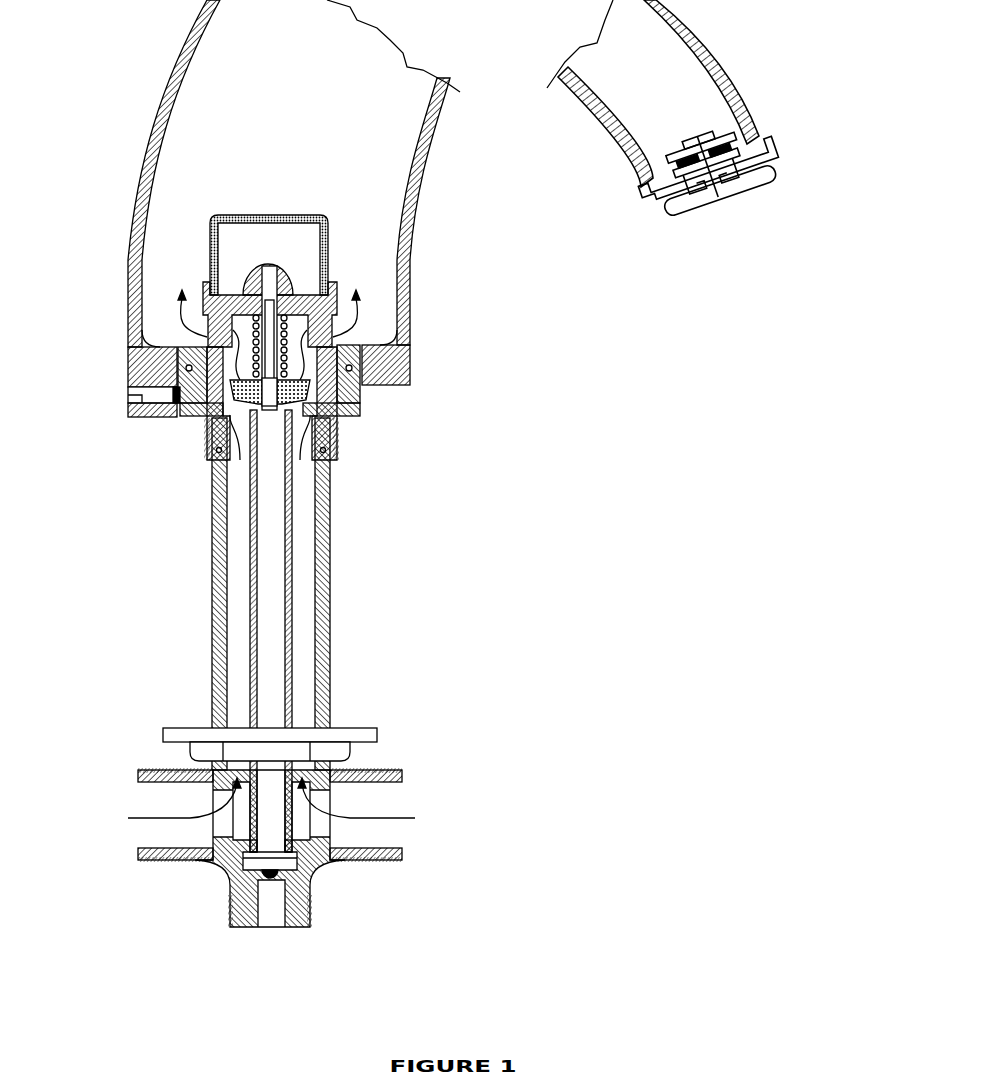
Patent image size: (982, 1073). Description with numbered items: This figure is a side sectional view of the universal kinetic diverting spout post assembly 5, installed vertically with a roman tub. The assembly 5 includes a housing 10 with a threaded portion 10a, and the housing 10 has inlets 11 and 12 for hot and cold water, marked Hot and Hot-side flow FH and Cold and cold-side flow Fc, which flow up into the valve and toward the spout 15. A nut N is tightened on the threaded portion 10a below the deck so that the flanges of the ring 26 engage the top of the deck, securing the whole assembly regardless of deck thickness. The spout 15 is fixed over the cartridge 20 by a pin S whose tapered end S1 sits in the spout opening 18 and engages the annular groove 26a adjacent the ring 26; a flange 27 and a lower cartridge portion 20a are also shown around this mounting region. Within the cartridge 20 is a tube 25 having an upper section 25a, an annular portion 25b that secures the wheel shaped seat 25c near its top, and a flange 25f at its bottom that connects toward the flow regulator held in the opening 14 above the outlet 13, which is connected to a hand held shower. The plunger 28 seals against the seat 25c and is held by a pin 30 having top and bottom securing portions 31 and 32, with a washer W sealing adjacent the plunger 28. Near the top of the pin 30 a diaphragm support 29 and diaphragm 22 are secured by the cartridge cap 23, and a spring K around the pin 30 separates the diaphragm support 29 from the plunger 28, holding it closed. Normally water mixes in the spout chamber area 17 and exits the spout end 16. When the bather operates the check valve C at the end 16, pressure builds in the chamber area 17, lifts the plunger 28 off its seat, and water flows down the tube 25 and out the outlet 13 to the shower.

The assembly 5 is at (442, 655).
The housing 10 is at (348, 627).
The threaded portion 10a is at (332, 590).
The hot water inlet 11 is at (400, 770).
The cold water inlet 12 is at (160, 770).
The outlet 13 is at (290, 928).
The opening 14 is at (232, 895).
The spout 15 is at (410, 262).
The spout end 16 is at (758, 128).
The spout chamber area 17 is at (268, 155).
The spout opening 18 is at (135, 412).
The cartridge 20 is at (207, 335).
The lower cartridge body 20a is at (340, 440).
The diaphragm 22 is at (323, 240).
The cartridge cap 23 is at (229, 216).
The tube 25 is at (290, 532).
The tube upper section 25a is at (322, 460).
The annular portion 25b is at (213, 490).
The wheel shaped seat 25c is at (210, 440).
The flange 25f is at (228, 872).
The ring 26 is at (360, 410).
The annular groove 26a is at (340, 388).
The spout flange 27 is at (400, 360).
The plunger 28 is at (212, 460).
The diaphragm support 29 is at (290, 262).
The pin 30 is at (246, 262).
The top securing portion 31 is at (270, 264).
The bottom securing portion 32 is at (318, 478).
The diverting mechanism combination check valve C is at (778, 170).
The spring K is at (212, 257).
The washer W is at (175, 362).
The pin S is at (140, 394).
The tapered end S1 is at (180, 410).
The nut N is at (378, 730).
The cold flow Fc is at (207, 367).
The hot flow FH is at (334, 367).
The cold water Cold is at (163, 802).
The hot water Hot is at (375, 802).